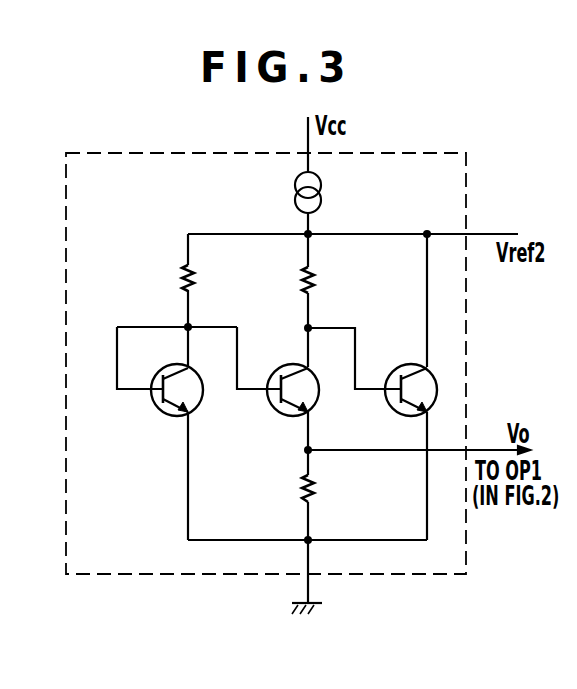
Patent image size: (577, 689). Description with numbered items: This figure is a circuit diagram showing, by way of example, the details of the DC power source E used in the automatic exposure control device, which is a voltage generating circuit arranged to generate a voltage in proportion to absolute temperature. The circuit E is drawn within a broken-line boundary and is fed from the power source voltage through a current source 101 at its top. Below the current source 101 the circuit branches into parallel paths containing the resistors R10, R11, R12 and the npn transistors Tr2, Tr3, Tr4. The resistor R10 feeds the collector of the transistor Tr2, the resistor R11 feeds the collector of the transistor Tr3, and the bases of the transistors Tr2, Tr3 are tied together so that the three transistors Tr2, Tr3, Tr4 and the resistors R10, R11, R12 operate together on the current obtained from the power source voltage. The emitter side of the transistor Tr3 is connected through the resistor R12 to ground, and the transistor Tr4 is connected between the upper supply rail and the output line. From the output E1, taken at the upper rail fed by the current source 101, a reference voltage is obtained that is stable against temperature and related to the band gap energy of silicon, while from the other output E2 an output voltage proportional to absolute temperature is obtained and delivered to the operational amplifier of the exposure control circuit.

The current source 101 is at (295, 186).
The resistor R10 is at (183, 289).
The resistor R11 is at (303, 289).
The resistor R12 is at (313, 488).
The npn transistor Tr2 is at (165, 416).
The npn transistor Tr3 is at (283, 416).
The npn transistor Tr4 is at (406, 365).
The DC power source E is at (432, 153).
The output E1 is at (478, 233).
The output E2 is at (485, 448).